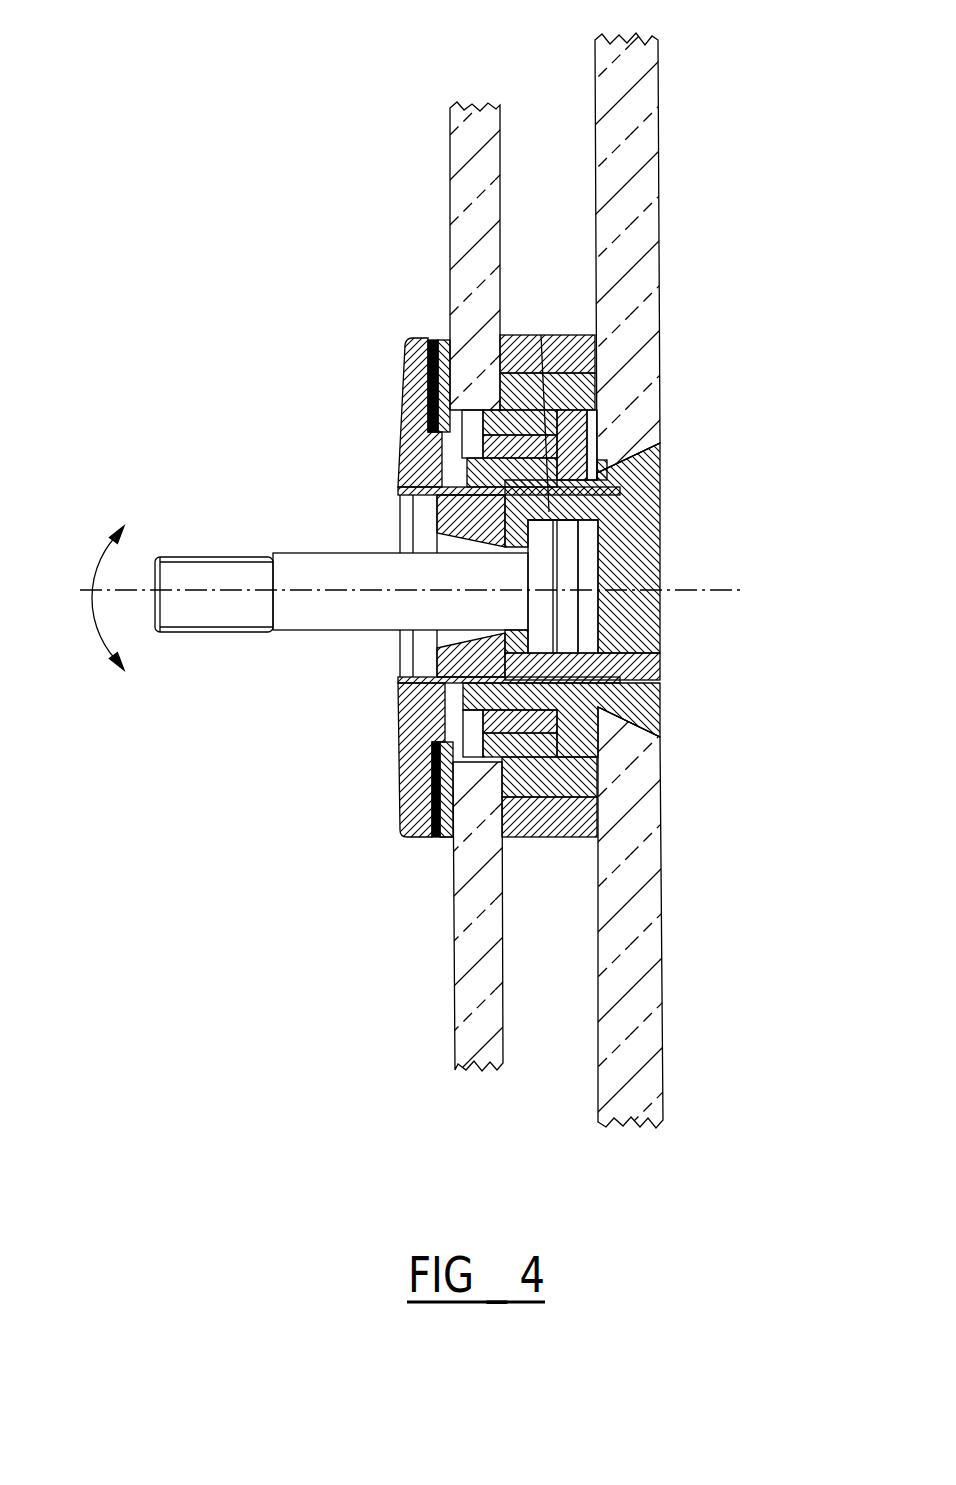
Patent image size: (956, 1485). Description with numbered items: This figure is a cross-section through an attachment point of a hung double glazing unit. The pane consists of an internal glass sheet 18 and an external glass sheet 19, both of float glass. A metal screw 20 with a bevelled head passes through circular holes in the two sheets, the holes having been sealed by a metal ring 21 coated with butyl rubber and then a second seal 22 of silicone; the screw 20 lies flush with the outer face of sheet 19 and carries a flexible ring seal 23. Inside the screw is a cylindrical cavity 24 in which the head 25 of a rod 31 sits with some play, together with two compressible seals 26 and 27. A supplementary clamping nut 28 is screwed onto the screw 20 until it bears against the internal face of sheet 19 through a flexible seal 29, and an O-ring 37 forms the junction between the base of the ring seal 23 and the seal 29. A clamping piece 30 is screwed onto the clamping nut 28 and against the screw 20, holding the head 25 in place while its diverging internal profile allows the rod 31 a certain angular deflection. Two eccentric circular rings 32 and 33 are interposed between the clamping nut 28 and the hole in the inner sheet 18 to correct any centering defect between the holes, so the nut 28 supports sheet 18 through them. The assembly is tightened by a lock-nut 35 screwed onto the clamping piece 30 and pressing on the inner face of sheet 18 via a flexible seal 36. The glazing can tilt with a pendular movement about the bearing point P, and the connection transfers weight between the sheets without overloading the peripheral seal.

The internal glass sheet 18 is at (472, 185).
The external glass sheet 19 is at (643, 83).
The metal screw 20 is at (660, 487).
The metal ring 21 is at (547, 837).
The second seal 22 is at (570, 777).
The flexible ring seal 23 is at (640, 441).
The cylindrical cavity 24 is at (565, 519).
The head 25 is at (610, 628).
The compressible seal 26 is at (615, 558).
The compressible seal 27 is at (510, 628).
The supplementary clamping nut 28 is at (447, 477).
The flexible seal 29 is at (598, 415).
The clamping piece 30 is at (455, 656).
The rod 31 is at (318, 567).
The eccentric circular ring 32 is at (443, 720).
The eccentric circular ring 33 is at (432, 760).
The lock-nut 35 is at (427, 805).
The flexible seal 36 is at (448, 840).
The O-ring 37 is at (600, 453).
The bearing point P is at (541, 335).